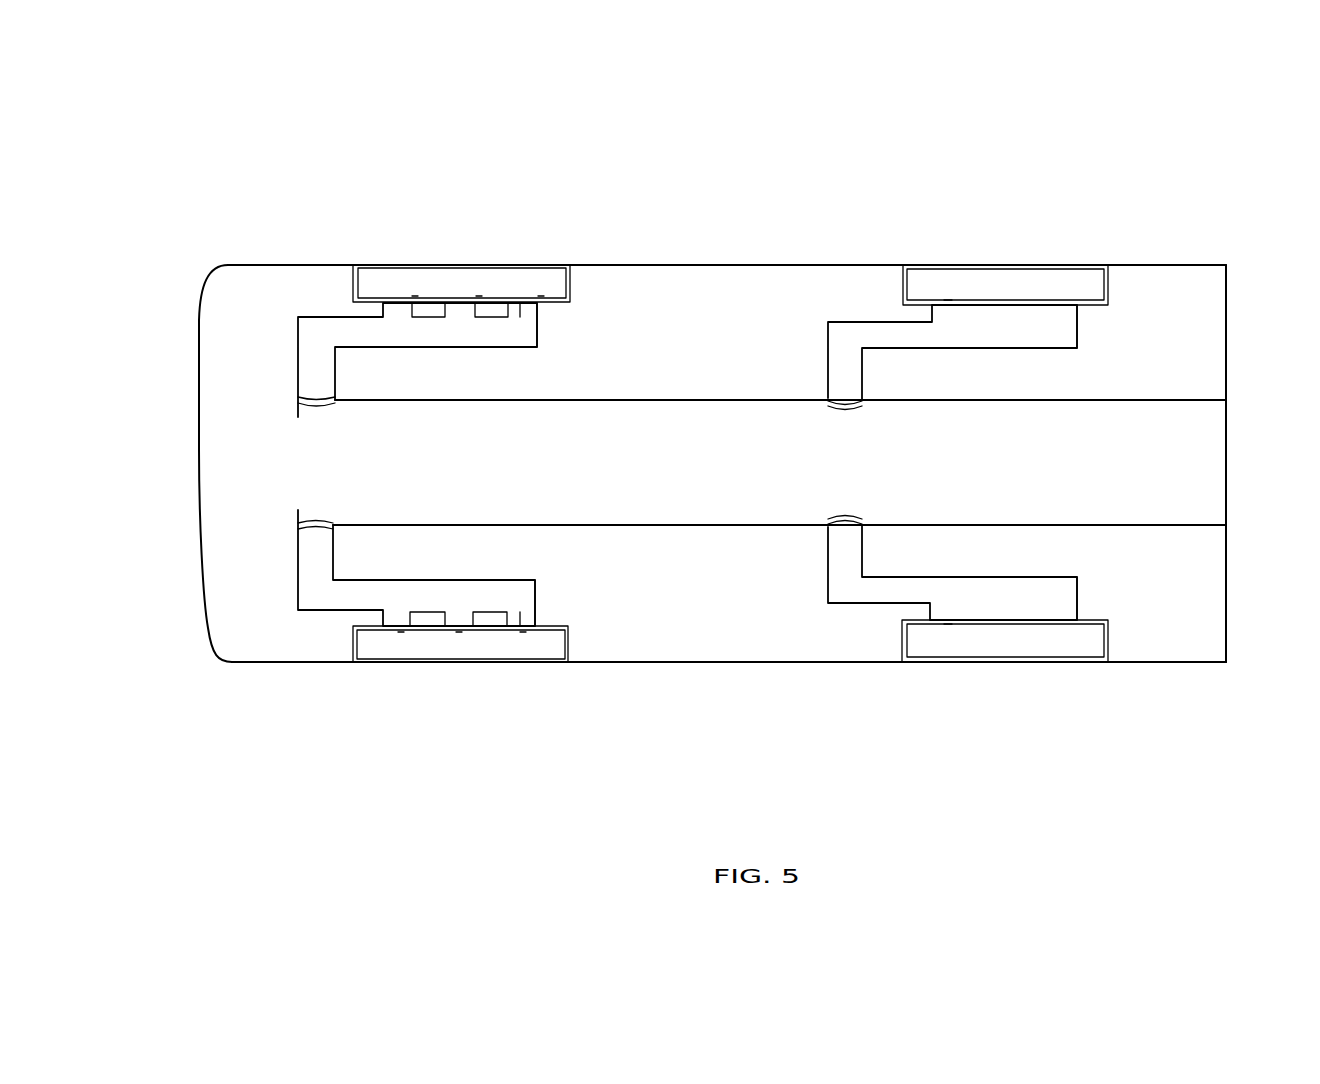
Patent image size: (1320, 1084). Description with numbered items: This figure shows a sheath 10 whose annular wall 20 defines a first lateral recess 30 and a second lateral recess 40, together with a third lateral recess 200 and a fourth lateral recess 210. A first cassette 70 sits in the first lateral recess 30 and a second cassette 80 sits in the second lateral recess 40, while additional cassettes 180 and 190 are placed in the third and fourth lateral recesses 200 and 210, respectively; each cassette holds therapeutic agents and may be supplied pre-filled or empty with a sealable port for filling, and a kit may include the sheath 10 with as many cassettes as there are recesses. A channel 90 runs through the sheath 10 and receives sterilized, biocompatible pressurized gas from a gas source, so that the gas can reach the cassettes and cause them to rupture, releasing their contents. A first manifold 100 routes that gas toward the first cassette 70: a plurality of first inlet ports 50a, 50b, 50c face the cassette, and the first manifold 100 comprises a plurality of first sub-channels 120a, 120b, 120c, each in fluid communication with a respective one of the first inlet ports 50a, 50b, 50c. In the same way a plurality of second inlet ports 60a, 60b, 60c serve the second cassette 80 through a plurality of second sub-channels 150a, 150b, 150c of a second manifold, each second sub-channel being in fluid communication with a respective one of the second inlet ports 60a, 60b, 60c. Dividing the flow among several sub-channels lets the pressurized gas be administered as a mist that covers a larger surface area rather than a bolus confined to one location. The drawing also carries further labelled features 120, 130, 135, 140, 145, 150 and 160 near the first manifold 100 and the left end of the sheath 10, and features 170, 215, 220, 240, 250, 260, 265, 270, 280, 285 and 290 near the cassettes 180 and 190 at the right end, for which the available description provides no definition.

The sheath 10 is at (993, 226).
The annular wall 20 is at (905, 662).
The first lateral recess 30 is at (354, 633).
The second lateral recess 40 is at (348, 265).
The first inlet port 50a is at (400, 627).
The first inlet port 50b is at (458, 627).
The first inlet port 50c is at (523, 626).
The second inlet port 60a is at (413, 299).
The second inlet port 60b is at (478, 298).
The second inlet port 60c is at (540, 298).
The first cassette 70 is at (454, 654).
The second cassette 80 is at (454, 294).
The channel 90 is at (672, 500).
The first manifold 100 is at (319, 307).
The lower lead finger 120 is at (537, 592).
The first sub-channel 120a is at (403, 613).
The first sub-channel 120b is at (460, 612).
The first sub-channel 120c is at (528, 612).
The lower lead end 130 is at (313, 542).
The lower lead end coating 135 is at (307, 525).
The upper lead end 140 is at (311, 392).
The upper lead end coating 145 is at (338, 403).
The upper lead finger 150 is at (533, 312).
The second sub-channel 150a is at (392, 307).
The second sub-channel 150b is at (458, 306).
The second sub-channel 150c is at (520, 310).
The first end of package 160 is at (196, 470).
The second end of package 170 is at (1238, 385).
The cassette 180 is at (1033, 654).
The cassette 190 is at (1033, 294).
The third lateral recess 200 is at (1095, 617).
The fourth lateral recess 210 is at (1110, 278).
The upper right die surface 215 is at (948, 303).
The lower right die surface 220 is at (947, 612).
The lower right lead frame 240 is at (808, 599).
The upper right lead frame 250 is at (815, 333).
The lower right lead end 260 is at (850, 565).
The lower right lead end coating 265 is at (843, 520).
The lower right lead finger 270 is at (1062, 596).
The upper right lead end 280 is at (838, 378).
The upper right lead end coating 285 is at (855, 393).
The upper right lead finger 290 is at (1073, 322).